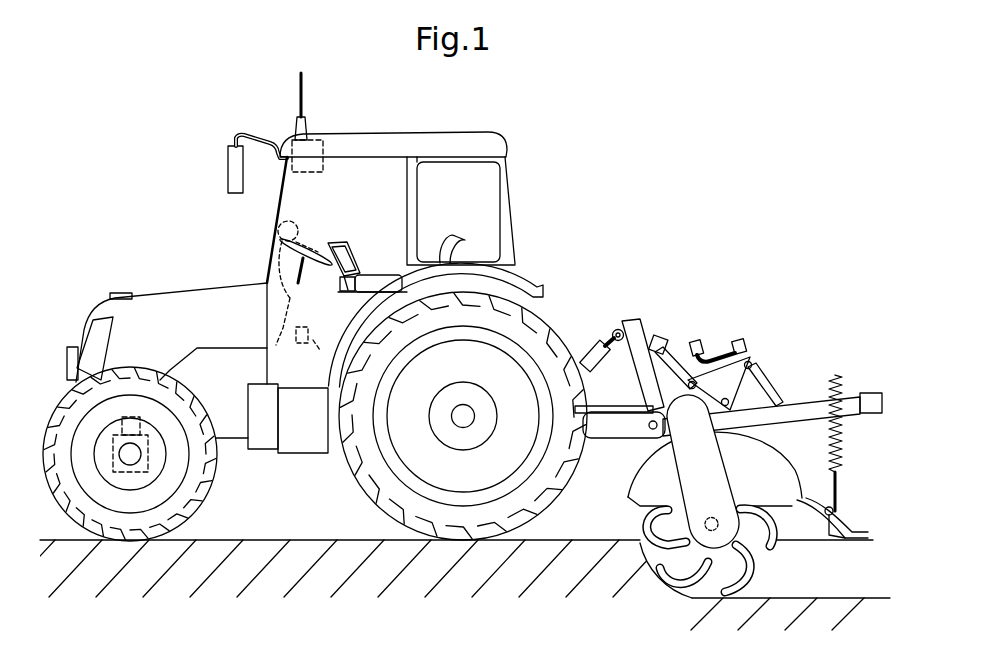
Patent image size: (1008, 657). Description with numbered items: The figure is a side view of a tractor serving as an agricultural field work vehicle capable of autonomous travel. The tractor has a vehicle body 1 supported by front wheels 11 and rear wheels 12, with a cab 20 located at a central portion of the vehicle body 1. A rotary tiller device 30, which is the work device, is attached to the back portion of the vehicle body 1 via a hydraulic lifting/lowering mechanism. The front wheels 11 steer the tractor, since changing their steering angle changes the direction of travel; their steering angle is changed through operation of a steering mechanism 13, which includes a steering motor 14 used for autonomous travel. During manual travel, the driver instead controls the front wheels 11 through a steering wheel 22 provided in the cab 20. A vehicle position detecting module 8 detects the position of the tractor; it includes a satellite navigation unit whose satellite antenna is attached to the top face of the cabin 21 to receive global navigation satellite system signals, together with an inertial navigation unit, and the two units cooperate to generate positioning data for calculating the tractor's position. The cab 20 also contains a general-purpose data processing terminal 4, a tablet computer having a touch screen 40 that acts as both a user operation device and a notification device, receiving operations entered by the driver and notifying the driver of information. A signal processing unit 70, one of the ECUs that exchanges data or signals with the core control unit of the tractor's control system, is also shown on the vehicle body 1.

The vehicle body 1 is at (308, 361).
The data processing terminal 4 is at (365, 233).
The vehicle position detecting module 8 is at (320, 140).
The front wheels 11 is at (127, 541).
The rear wheels 12 is at (478, 541).
The steering mechanism 13 is at (150, 470).
The steering motor 14 is at (122, 425).
The cab 20 is at (411, 186).
The cabin 21 is at (487, 138).
The steering wheel 22 is at (293, 240).
The rotary tiller device 30 is at (768, 336).
The touch screen 40 is at (350, 268).
The signal processing unit 70 is at (288, 418).